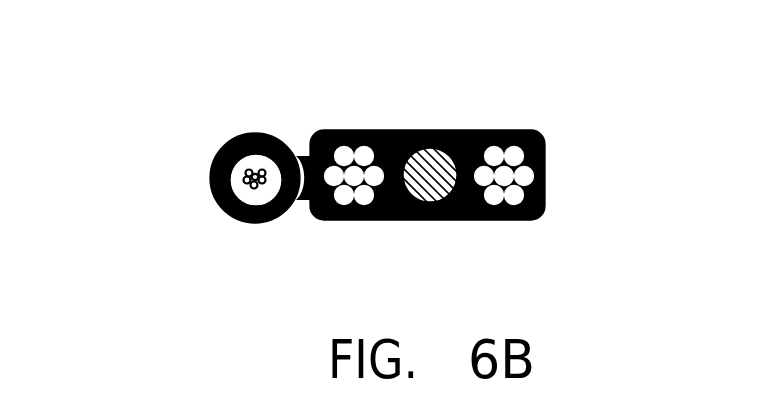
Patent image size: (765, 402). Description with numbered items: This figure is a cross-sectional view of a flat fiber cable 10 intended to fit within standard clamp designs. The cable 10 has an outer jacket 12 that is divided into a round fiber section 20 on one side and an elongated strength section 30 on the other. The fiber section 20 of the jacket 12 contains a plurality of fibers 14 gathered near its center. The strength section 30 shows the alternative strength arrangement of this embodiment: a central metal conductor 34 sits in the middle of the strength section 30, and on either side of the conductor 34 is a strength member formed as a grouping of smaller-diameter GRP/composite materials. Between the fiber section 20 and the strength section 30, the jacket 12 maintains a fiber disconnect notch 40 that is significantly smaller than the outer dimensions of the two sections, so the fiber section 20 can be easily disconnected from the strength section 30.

The cable 10 is at (118, 42).
The outer jacket 12 is at (393, 133).
The fibers 14 is at (247, 172).
The fiber section 20 is at (263, 224).
The strength section 30 is at (443, 220).
The central metal conductor 34 is at (432, 157).
The fiber disconnect notch 40 is at (300, 133).